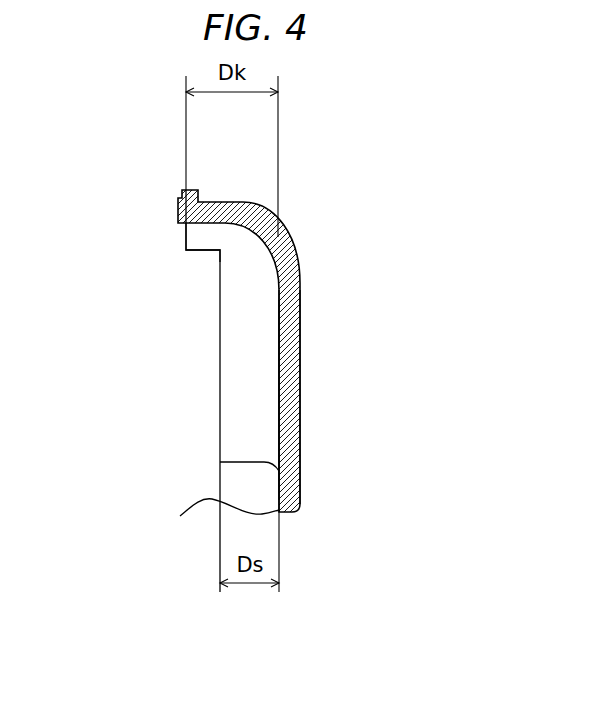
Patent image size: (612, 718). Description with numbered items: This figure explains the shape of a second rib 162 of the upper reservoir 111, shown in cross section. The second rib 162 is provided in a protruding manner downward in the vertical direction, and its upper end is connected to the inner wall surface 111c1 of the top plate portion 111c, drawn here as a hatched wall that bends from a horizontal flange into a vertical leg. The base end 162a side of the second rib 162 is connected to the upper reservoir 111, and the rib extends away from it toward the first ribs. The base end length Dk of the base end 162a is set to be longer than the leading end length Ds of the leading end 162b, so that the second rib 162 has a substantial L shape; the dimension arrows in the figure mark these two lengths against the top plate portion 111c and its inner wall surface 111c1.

The upper reservoir 111 is at (322, 218).
The top plate portion 111c is at (300, 312).
The inner wall surface 111c1 is at (277, 356).
The second rib 162 is at (226, 343).
The base end 162a is at (187, 237).
The leading end 162b is at (226, 456).